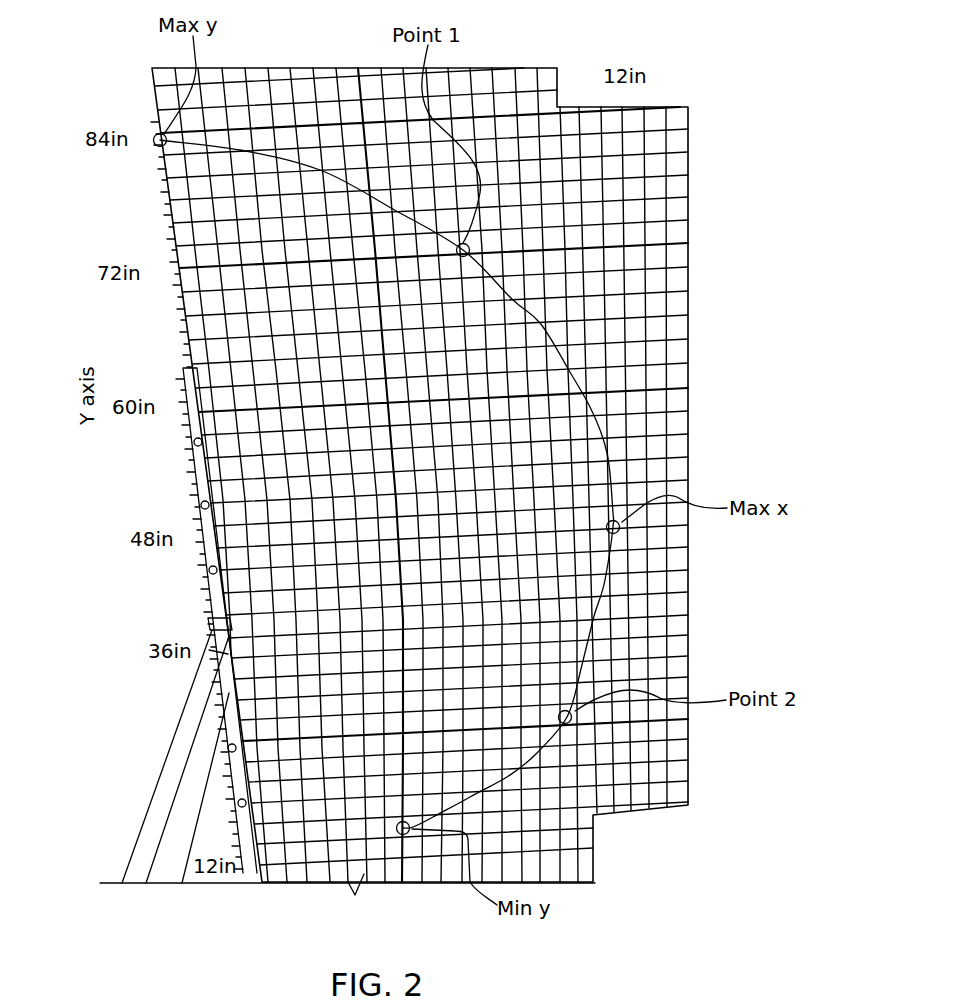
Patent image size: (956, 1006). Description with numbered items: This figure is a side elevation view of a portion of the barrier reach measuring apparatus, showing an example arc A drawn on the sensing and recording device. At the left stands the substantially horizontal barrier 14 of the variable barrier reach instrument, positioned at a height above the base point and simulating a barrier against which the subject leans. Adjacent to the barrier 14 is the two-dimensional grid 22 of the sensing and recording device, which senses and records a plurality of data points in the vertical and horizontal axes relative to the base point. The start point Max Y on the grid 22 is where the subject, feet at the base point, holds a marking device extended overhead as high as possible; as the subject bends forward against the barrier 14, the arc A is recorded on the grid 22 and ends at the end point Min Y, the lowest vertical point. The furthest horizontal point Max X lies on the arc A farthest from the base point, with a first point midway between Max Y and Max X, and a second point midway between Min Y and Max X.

The barrier 14 is at (200, 777).
The two-dimensional grid 22 is at (636, 298).
The arc A is at (518, 292).